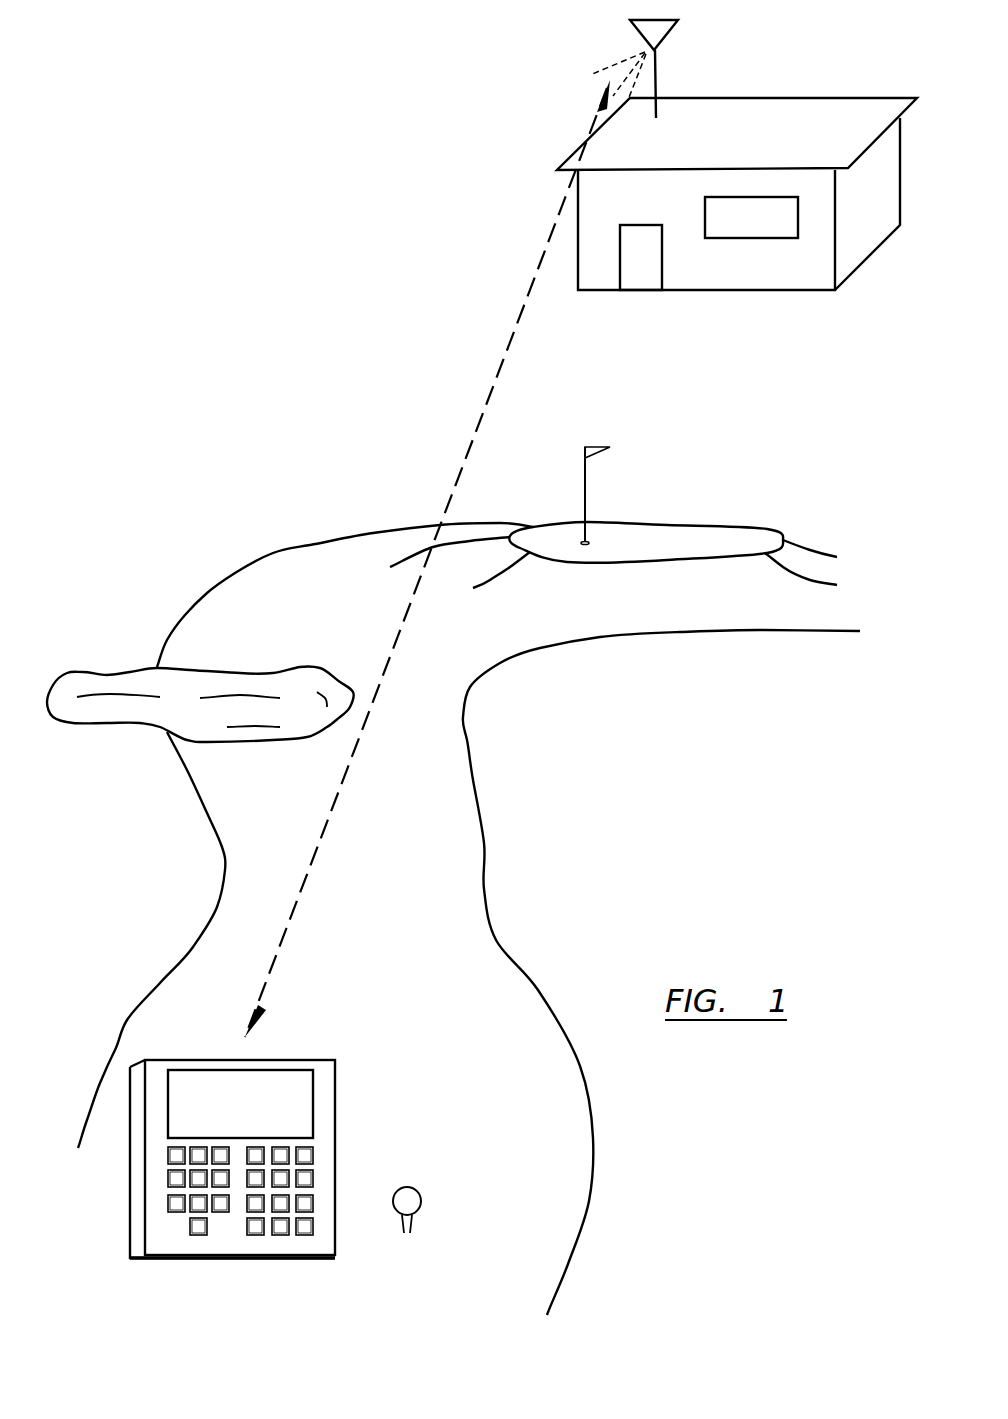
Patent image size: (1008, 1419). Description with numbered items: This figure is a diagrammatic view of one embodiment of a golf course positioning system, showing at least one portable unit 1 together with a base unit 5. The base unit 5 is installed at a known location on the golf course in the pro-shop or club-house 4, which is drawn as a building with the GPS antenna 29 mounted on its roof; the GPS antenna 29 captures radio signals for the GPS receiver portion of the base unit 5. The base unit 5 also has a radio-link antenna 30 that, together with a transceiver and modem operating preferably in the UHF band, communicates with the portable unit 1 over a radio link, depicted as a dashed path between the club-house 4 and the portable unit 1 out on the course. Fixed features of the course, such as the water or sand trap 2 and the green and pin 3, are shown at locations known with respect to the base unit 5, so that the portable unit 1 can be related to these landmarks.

The portable unit 1 is at (130, 1110).
The water or sand trap 2 is at (285, 743).
The green and pin 3 is at (728, 525).
The pro-shop or club-house 4 is at (883, 95).
The base unit 5 is at (778, 97).
The GPS antenna 29 is at (642, 22).
The antenna 30 is at (643, 47).